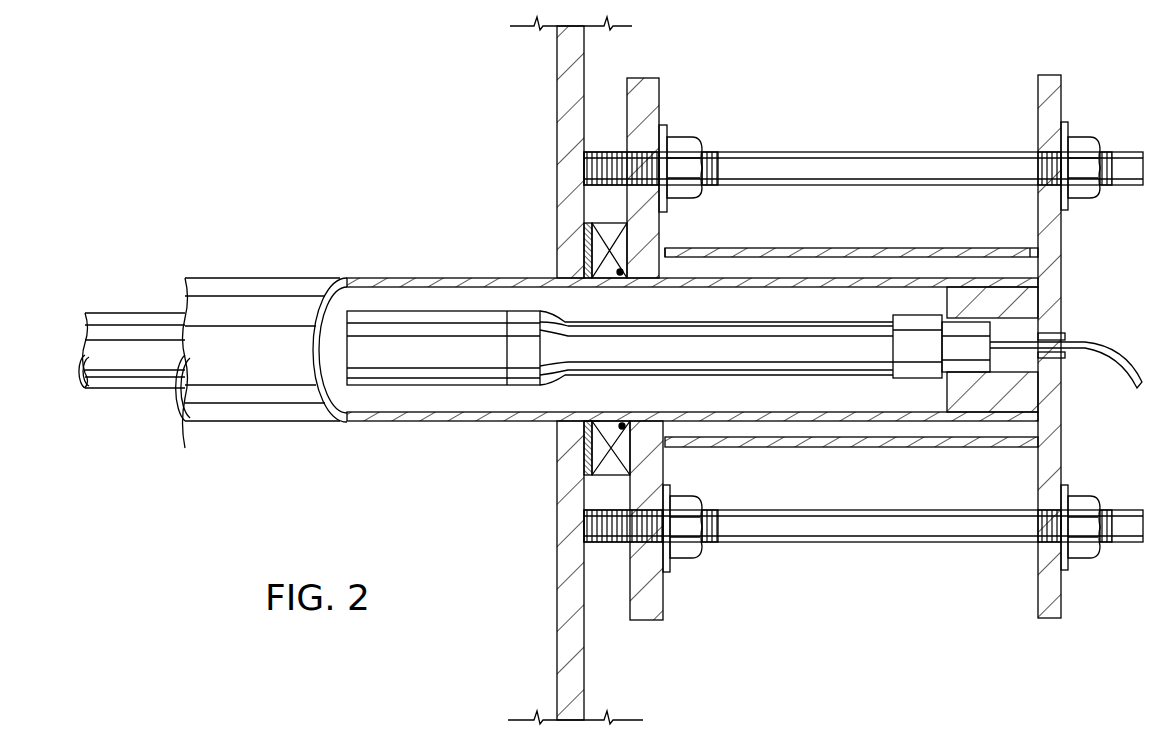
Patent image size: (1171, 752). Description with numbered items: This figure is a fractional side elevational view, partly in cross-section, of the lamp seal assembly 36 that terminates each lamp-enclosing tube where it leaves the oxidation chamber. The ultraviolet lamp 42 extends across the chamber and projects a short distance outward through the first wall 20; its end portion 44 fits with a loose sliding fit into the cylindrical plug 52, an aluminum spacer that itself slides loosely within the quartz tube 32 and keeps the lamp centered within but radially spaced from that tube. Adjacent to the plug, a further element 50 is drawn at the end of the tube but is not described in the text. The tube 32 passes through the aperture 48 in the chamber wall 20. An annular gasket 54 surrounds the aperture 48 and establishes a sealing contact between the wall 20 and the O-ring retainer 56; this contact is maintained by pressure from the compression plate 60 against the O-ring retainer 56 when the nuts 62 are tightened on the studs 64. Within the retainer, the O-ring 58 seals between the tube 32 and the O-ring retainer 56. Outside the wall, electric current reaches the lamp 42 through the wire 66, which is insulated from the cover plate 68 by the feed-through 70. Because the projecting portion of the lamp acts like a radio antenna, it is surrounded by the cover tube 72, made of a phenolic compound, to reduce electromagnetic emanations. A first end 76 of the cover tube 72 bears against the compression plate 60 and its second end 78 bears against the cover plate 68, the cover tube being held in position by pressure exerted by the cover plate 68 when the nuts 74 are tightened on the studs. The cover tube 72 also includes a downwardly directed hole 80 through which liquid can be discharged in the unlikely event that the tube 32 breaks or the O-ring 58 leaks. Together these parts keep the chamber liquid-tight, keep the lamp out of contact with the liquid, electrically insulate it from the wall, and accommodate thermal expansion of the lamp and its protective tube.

The first wall 20 is at (556, 617).
The tube 32 is at (485, 278).
The lamp seal assembly 36 is at (483, 494).
The lamp 42 is at (430, 311).
The end portion 44 is at (996, 338).
The aperture 48 is at (570, 428).
The plug upper portion 50 is at (1036, 285).
The cylindrical plug 52 is at (1027, 395).
The annular gasket 54 is at (576, 252).
The O-ring retainer 56 is at (598, 486).
The O-ring 58 is at (587, 460).
The compression plate 60 is at (658, 80).
The nuts 62 is at (683, 138).
The studs 64 is at (822, 152).
The wire 66 is at (1134, 366).
The cover plate 68 is at (1058, 112).
The feed-through 70 is at (1061, 354).
The cover tube 72 is at (960, 249).
The nuts 74 is at (1085, 138).
The first end 76 is at (668, 250).
The second end 78 is at (1031, 249).
The downwardly directed hole 80 is at (991, 447).